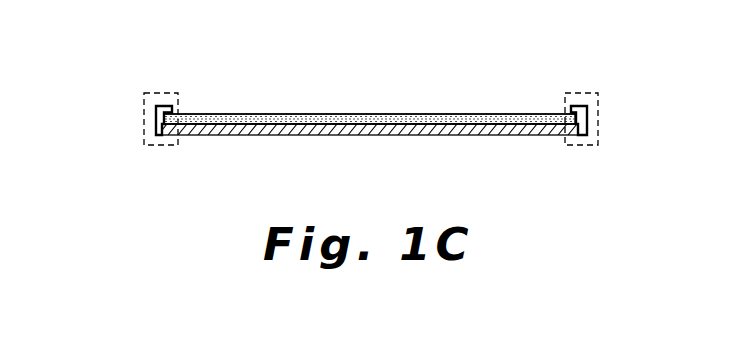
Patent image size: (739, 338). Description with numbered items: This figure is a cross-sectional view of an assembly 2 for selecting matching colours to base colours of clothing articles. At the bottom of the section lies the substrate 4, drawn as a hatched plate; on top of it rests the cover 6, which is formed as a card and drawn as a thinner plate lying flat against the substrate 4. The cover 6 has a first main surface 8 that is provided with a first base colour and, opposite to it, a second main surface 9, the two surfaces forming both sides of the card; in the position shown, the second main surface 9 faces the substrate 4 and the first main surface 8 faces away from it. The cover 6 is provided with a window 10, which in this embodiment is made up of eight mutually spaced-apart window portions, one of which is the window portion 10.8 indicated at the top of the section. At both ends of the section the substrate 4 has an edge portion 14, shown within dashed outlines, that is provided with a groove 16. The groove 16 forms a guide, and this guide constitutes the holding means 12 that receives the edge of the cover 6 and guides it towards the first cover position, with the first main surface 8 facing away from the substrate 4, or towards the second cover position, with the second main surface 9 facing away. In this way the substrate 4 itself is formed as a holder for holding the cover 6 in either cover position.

The assembly 2 is at (420, 97).
The substrate 4 is at (462, 130).
The cover 6 is at (458, 118).
The first main surface 8 is at (382, 114).
The second main surface 9 is at (277, 127).
The window 10 is at (343, 114).
The window portion 10.8 is at (369, 119).
The holding means 12 is at (153, 118).
The edge portion 14 is at (158, 90).
The groove 16 is at (177, 112).